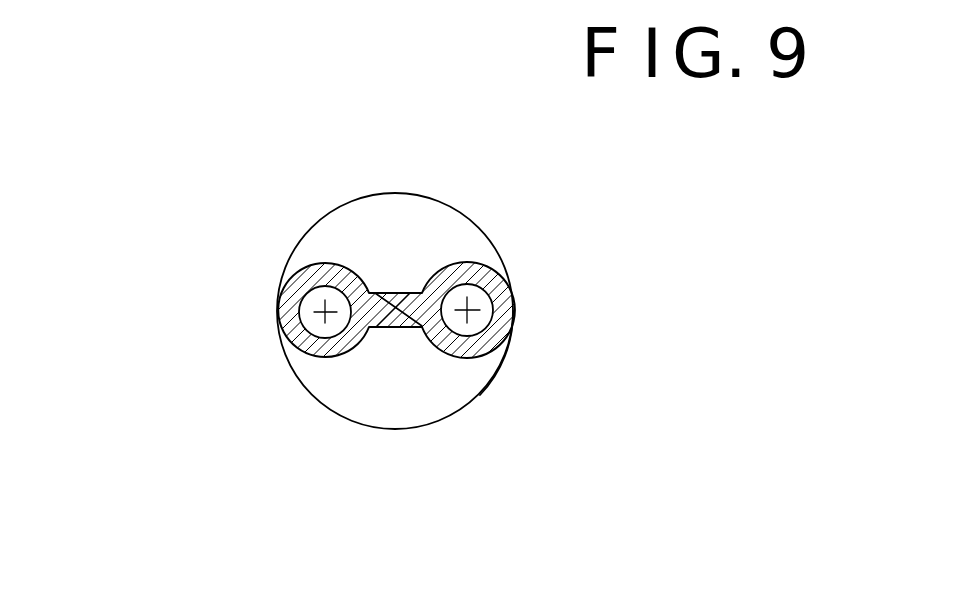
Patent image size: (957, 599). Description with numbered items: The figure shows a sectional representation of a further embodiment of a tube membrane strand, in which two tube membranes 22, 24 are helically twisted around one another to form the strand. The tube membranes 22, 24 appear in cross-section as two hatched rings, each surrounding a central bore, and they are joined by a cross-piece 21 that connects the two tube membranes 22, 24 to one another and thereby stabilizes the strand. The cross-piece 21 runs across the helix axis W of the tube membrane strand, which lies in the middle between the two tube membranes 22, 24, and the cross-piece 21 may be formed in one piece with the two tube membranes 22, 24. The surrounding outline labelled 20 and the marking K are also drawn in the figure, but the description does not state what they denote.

The cable assembly 20 is at (232, 232).
The cross-piece 21 is at (386, 330).
The tube membrane 22 is at (290, 348).
The tube membrane 24 is at (473, 353).
The helix axis W is at (395, 292).
The outer sheath K is at (502, 360).